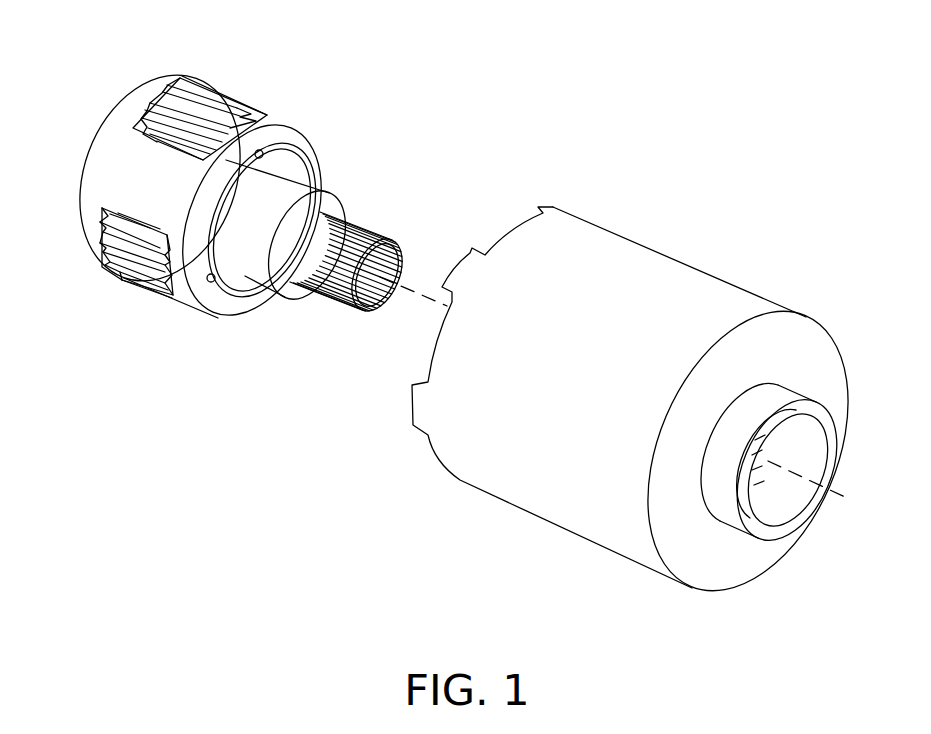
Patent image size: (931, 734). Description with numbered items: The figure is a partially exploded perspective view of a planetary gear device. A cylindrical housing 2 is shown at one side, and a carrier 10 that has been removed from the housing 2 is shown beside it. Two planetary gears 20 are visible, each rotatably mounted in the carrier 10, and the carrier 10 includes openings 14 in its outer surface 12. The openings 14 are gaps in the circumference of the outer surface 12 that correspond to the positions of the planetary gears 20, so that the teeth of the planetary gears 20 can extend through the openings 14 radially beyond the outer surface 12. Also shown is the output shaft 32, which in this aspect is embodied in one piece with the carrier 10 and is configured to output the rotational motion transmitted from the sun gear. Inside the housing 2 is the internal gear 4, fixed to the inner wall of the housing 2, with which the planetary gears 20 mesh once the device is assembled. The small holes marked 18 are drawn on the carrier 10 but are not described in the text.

The housing 2 is at (732, 290).
The internal gear 4 is at (765, 472).
The carrier 10 is at (280, 133).
The outer surface 12 is at (105, 163).
The openings 14 is at (143, 120).
The holes 18 is at (264, 153).
The planetary gears 20 is at (200, 101).
The output shaft 32 is at (365, 228).